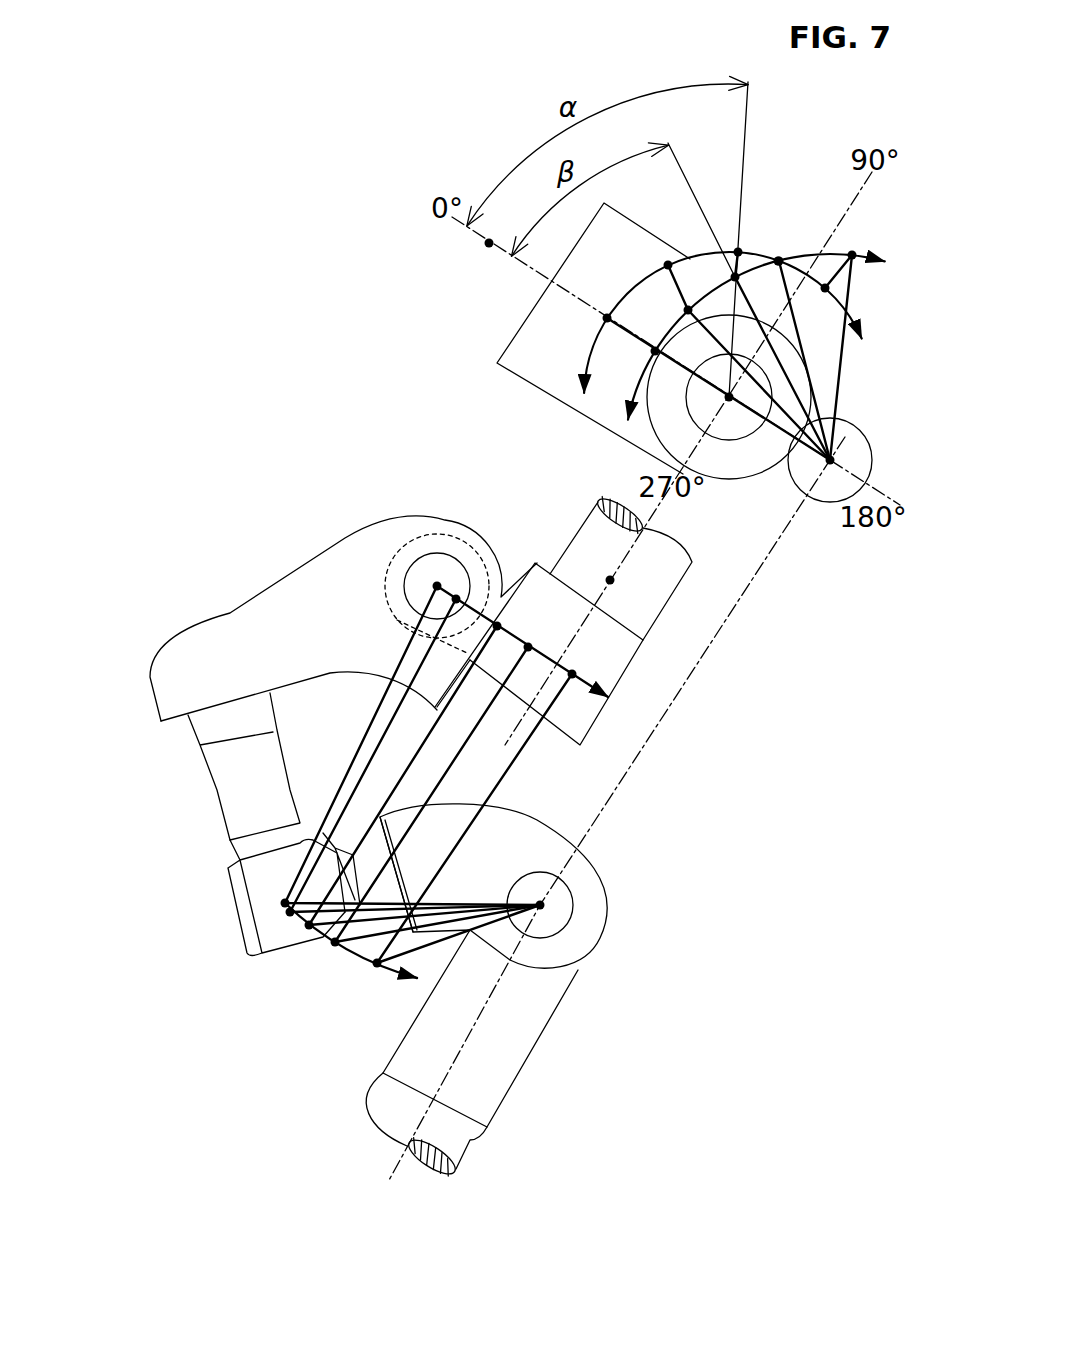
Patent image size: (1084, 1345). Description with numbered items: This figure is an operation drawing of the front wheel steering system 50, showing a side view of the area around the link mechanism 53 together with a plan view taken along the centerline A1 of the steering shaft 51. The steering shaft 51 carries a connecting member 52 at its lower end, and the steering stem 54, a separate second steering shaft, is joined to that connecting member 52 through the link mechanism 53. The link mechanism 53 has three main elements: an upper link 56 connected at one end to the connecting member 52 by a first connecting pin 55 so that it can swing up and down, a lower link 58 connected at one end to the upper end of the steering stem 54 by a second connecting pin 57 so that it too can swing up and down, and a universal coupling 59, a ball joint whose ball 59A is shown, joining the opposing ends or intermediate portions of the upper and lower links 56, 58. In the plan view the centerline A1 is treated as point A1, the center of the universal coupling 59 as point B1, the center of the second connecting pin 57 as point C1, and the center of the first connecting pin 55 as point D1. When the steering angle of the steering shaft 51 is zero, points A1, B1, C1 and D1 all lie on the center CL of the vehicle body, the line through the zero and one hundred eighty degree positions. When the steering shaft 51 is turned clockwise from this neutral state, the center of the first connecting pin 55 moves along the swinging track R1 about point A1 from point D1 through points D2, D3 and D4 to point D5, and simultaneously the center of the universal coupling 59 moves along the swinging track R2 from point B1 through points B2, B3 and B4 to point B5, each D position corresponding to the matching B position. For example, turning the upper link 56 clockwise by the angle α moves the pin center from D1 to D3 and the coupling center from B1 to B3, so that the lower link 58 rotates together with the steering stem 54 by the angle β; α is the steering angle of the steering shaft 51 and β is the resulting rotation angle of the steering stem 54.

The link mechanism 50 is at (283, 497).
The steering shaft 51 is at (658, 588).
The connecting member 52 is at (505, 353).
The link mechanism 53 is at (337, 597).
The steering stem 54 is at (852, 433).
The first connecting pin 55 is at (418, 560).
The upper link 56 is at (253, 603).
The second connecting pin 57 is at (560, 925).
The lower link 58 is at (505, 830).
The universal coupling 59 is at (258, 882).
The ball 59A is at (218, 876).
The centerline of the steering shaft A1 is at (729, 400).
The center of the second connecting pin C1 is at (832, 465).
The center of the vehicle body CL is at (486, 244).
The center of the first connecting pin D1 is at (607, 318).
The point D2 is at (668, 265).
The point D3 is at (738, 252).
The point D4 is at (779, 261).
The point D5 is at (828, 289).
The center of the universal coupling B1 is at (653, 351).
The point B2 is at (686, 310).
The point B3 is at (735, 277).
The point B4 is at (778, 261).
The point B5 is at (852, 255).
The swinging track R1 is at (580, 385).
The swinging track R2 is at (632, 415).